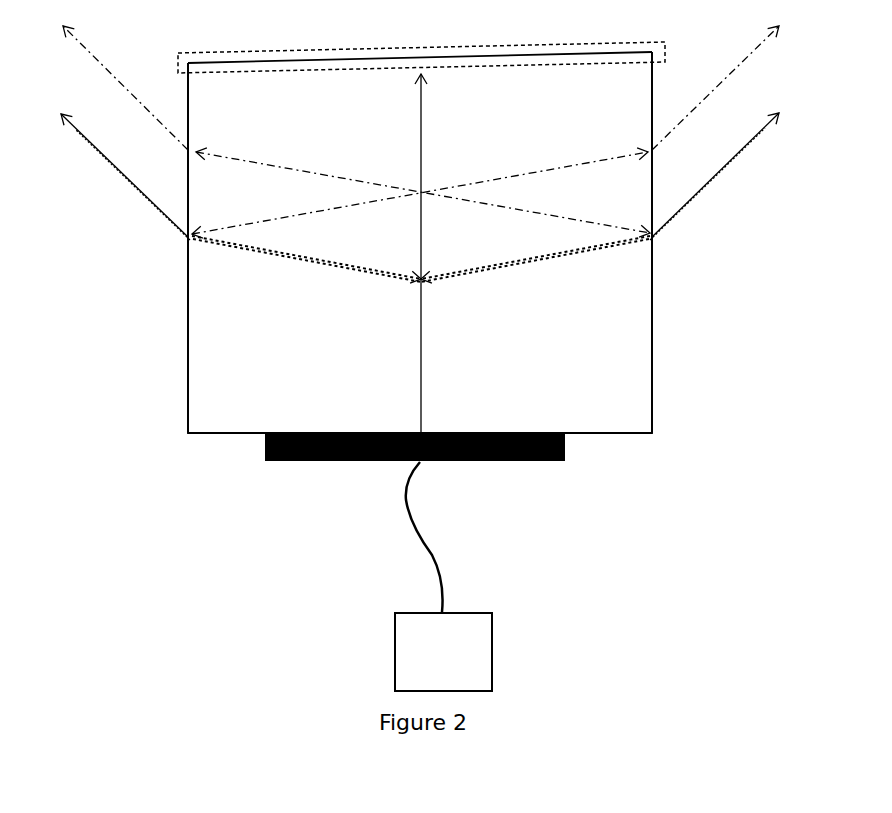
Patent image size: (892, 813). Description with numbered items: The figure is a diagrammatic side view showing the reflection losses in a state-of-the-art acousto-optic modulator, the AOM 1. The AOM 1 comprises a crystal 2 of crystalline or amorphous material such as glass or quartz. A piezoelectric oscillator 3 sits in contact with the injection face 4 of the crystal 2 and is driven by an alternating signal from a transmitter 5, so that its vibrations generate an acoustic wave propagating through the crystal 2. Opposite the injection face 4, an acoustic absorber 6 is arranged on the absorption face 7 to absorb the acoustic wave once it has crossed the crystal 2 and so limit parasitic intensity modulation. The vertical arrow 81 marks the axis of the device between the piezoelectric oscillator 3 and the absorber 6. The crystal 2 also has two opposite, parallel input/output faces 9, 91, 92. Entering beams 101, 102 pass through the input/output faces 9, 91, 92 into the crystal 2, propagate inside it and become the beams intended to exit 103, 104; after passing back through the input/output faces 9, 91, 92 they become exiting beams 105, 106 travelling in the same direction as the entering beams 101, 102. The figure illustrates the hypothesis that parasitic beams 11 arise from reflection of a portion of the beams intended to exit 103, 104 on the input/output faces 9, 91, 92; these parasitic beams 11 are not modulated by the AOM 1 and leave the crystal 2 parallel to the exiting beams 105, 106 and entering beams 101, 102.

The acousto-optic modulator 1 is at (681, 533).
The crystal 2 is at (600, 387).
The piezoelectric oscillator 3 is at (342, 462).
The injection face 4 is at (232, 433).
The transmitter 5 is at (425, 637).
The acoustic absorber 6 is at (335, 68).
The absorption face 7 is at (498, 58).
The optical axis 81 is at (422, 157).
The input/output faces 9 is at (423, 242).
The first input/output face 91 is at (187, 330).
The second input/output face 92 is at (653, 327).
The parasitic beams 11 is at (106, 68).
The first entering beam 101 is at (118, 177).
The first exiting beam 105 is at (113, 165).
The second entering beam 102 is at (740, 180).
The second exiting beam 106 is at (723, 168).
The first beam intended to exit 103 is at (327, 260).
The second beam intended to exit 104 is at (286, 256).